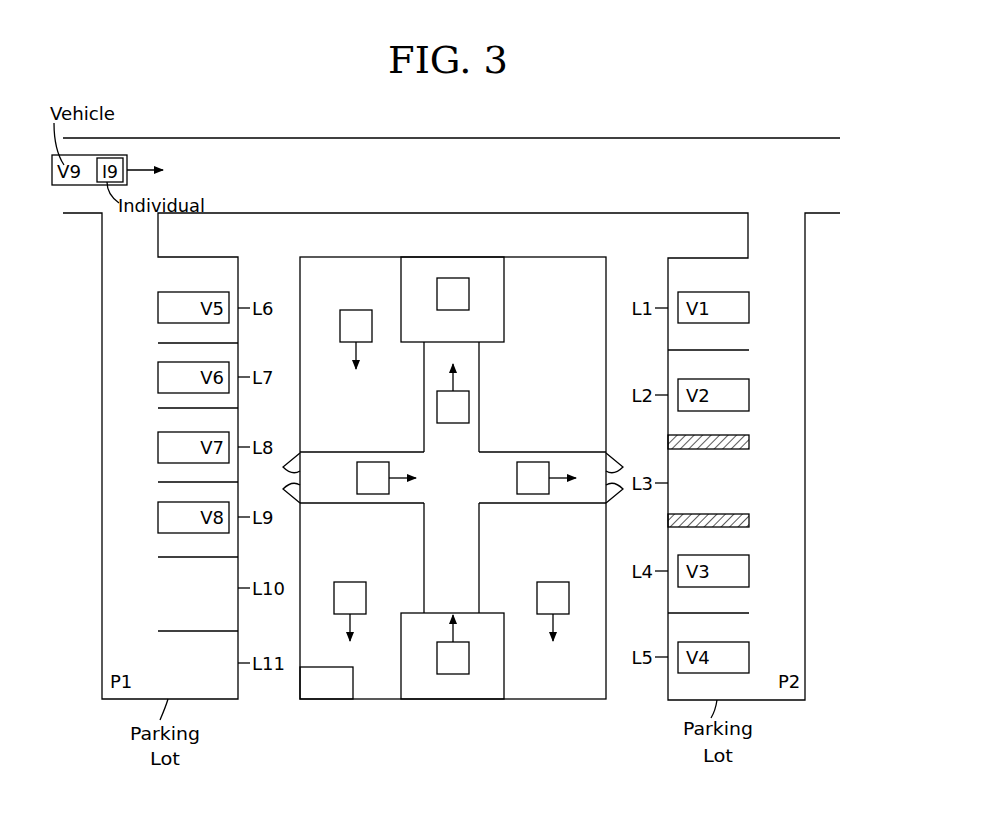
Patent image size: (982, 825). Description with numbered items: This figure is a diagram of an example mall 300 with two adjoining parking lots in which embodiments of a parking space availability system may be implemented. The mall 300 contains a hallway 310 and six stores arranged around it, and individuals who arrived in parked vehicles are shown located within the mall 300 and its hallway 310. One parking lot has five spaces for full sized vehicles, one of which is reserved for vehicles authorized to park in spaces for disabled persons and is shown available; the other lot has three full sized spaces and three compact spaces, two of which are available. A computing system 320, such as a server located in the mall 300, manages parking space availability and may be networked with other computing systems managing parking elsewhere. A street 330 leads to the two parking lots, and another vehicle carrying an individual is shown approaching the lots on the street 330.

The mall 300 is at (540, 699).
The hallway 310 is at (474, 600).
The computing system 320 is at (326, 683).
The street 330 is at (834, 196).